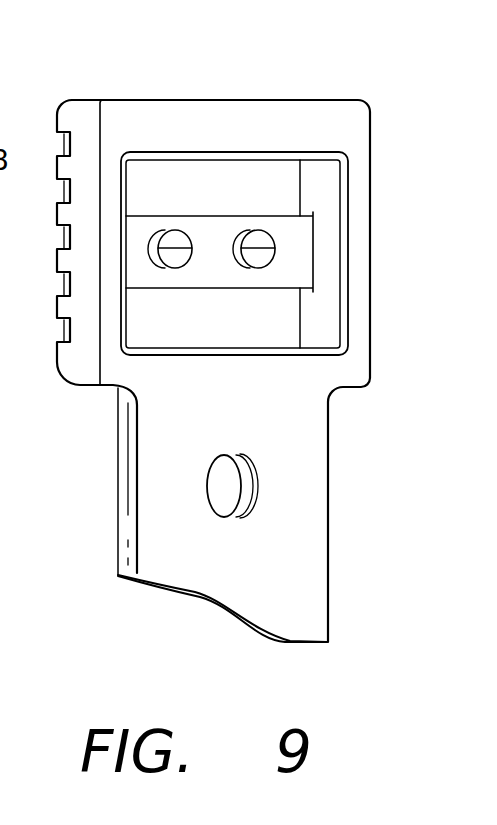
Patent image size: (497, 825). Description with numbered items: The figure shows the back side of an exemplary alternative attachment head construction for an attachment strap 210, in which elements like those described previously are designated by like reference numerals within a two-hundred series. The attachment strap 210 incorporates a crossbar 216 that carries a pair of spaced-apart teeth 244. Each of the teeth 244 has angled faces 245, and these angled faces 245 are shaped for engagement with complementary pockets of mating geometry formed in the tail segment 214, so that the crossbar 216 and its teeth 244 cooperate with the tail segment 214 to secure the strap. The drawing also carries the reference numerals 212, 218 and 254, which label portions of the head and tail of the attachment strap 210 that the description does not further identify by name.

The attachment strap 210 is at (349, 82).
The head portion with recess 212 is at (246, 95).
The tail segment 214 is at (333, 548).
The crossbar 216 is at (117, 388).
The ribs / grooves 218 is at (72, 172).
The teeth 244 is at (259, 228).
The angled faces 245 is at (172, 256).
The mounting hole 254 is at (257, 481).